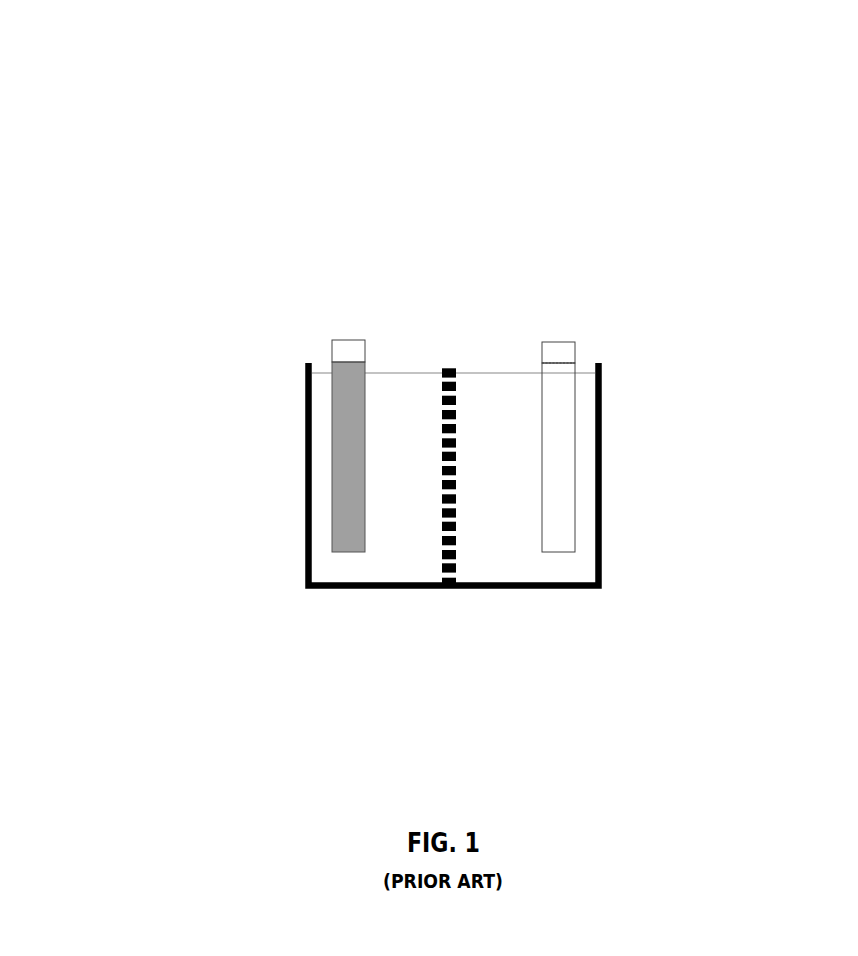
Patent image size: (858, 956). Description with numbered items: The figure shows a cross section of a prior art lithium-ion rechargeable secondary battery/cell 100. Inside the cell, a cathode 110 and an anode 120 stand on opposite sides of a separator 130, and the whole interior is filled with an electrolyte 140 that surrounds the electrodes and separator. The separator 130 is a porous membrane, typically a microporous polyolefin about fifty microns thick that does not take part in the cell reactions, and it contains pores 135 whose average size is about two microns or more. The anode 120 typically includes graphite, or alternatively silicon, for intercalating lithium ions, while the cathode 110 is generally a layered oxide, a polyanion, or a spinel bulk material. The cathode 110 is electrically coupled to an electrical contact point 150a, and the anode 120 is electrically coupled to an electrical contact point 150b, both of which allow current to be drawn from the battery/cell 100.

The secondary battery/cell 100 is at (490, 172).
The cathode 110 is at (349, 457).
The anode 120 is at (562, 440).
The separator 130 is at (455, 552).
The pores 135 is at (455, 500).
The electrolyte 140 is at (188, 572).
The electrical contact point 150a is at (349, 340).
The electrical contact point 150b is at (560, 343).